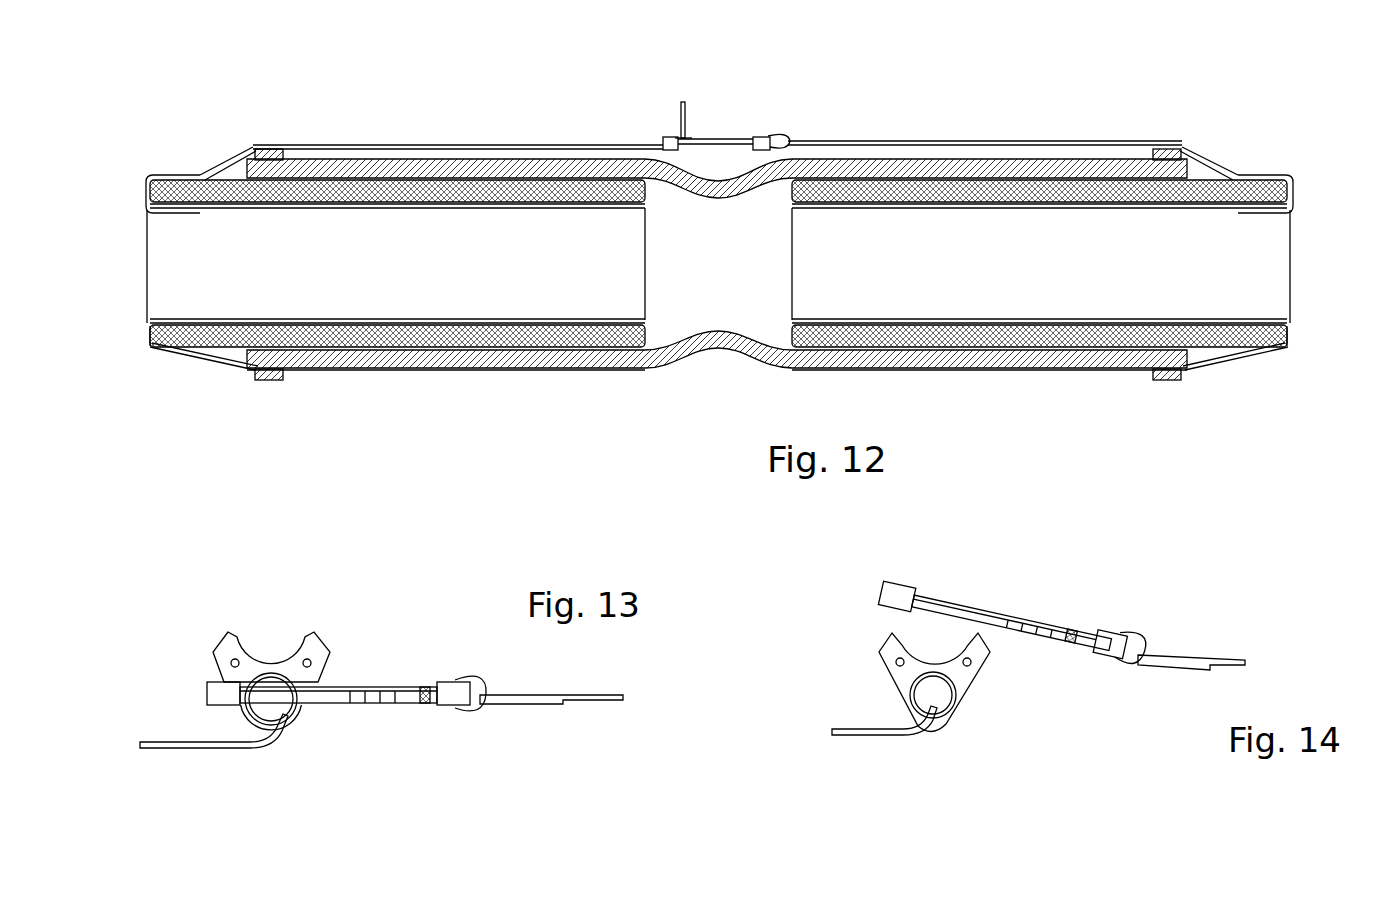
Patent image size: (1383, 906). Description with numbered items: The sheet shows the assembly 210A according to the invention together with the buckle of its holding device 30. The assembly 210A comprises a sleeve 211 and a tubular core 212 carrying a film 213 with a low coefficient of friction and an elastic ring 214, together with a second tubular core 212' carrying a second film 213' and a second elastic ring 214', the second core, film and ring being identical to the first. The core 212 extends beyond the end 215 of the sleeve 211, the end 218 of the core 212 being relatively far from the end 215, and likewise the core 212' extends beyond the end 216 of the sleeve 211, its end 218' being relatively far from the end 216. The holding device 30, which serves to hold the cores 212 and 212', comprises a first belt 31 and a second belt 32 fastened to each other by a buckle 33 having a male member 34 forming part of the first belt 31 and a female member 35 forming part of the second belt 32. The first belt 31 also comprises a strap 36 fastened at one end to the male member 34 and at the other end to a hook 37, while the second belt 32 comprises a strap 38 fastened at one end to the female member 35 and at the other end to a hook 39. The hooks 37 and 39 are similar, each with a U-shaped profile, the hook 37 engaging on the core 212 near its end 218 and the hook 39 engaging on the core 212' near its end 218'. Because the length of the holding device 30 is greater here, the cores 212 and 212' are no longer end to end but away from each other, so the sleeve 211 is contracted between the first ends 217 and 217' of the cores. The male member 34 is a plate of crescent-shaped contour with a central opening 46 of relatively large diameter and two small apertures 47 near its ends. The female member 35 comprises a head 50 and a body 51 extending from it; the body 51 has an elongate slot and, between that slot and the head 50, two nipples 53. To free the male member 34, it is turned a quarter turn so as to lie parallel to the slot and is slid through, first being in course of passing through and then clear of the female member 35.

In FIG. 12, the assembly 210A is at (726, 250).
In FIG. 12, the holding device 30 is at (717, 99).
In FIG. 12, the first belt 31 is at (458, 106).
In FIG. 12, the second belt 32 is at (985, 108).
In FIG. 12, the buckle 33 is at (709, 102).
In FIG. 12, the male member 34 is at (680, 122).
In FIG. 13, the male member 34 is at (264, 663).
In FIG. 14, the male member 34 is at (900, 676).
In FIG. 12, the female member 35 is at (742, 137).
In FIG. 13, the female member 35 is at (338, 681).
In FIG. 14, the female member 35 is at (962, 618).
In FIG. 12, the strap 36 is at (376, 147).
In FIG. 13, the strap 36 is at (150, 749).
In FIG. 14, the strap 36 is at (855, 736).
In FIG. 12, the hook 37 is at (173, 168).
In FIG. 12, the strap 38 is at (1048, 147).
In FIG. 13, the strap 38 is at (605, 702).
In FIG. 14, the strap 38 is at (1233, 657).
In FIG. 12, the hook 39 is at (1266, 178).
In FIG. 13, the central opening 46 is at (272, 688).
In FIG. 13, the apertures 47 is at (229, 668).
In FIG. 13, the head 50 is at (448, 705).
In FIG. 13, the body 51 is at (330, 703).
In FIG. 13, the nipples 53 is at (400, 703).
In FIG. 12, the sleeve 211 is at (437, 370).
In FIG. 12, the core 212 is at (446, 388).
In FIG. 12, the second tubular core 212' is at (989, 394).
In FIG. 12, the film 213 is at (397, 371).
In FIG. 12, the second film 213' is at (1039, 371).
In FIG. 12, the elastic ring 214 is at (279, 406).
In FIG. 12, the second elastic ring 214' is at (1179, 400).
In FIG. 12, the end of the sleeve 215 is at (222, 368).
In FIG. 12, the end of the sleeve 216 is at (1200, 370).
In FIG. 12, the first end of the core 217 is at (598, 306).
In FIG. 12, the first end of the second core 217' is at (849, 304).
In FIG. 12, the end of the core 218 is at (112, 355).
In FIG. 12, the end of the second core 218' is at (1332, 346).